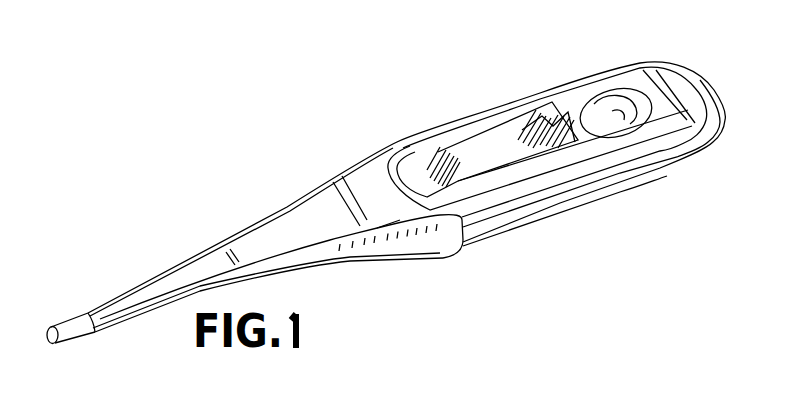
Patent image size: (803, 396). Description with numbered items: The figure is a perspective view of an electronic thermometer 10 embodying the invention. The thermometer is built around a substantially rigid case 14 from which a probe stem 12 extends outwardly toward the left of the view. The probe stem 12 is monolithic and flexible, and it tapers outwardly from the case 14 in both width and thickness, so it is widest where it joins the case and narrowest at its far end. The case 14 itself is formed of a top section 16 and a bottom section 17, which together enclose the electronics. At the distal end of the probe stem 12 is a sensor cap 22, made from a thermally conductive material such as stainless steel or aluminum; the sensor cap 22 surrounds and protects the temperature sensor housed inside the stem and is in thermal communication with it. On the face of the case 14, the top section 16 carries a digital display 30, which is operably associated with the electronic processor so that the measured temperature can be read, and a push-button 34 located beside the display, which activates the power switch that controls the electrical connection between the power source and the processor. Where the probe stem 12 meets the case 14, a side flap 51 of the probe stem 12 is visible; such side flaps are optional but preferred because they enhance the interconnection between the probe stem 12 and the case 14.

The electronic thermometer 10 is at (340, 152).
The probe stem 12 is at (194, 264).
The case 14 is at (690, 92).
The top section 16 is at (700, 138).
The bottom section 17 is at (608, 183).
The sensor cap 22 is at (77, 318).
The digital display 30 is at (497, 148).
The push-button 34 is at (595, 112).
The side flap 51 is at (450, 240).